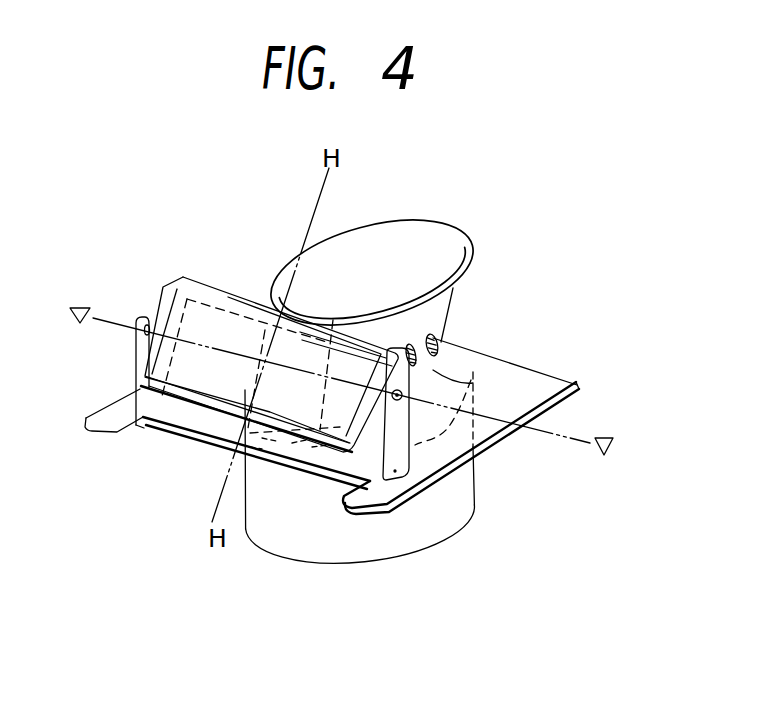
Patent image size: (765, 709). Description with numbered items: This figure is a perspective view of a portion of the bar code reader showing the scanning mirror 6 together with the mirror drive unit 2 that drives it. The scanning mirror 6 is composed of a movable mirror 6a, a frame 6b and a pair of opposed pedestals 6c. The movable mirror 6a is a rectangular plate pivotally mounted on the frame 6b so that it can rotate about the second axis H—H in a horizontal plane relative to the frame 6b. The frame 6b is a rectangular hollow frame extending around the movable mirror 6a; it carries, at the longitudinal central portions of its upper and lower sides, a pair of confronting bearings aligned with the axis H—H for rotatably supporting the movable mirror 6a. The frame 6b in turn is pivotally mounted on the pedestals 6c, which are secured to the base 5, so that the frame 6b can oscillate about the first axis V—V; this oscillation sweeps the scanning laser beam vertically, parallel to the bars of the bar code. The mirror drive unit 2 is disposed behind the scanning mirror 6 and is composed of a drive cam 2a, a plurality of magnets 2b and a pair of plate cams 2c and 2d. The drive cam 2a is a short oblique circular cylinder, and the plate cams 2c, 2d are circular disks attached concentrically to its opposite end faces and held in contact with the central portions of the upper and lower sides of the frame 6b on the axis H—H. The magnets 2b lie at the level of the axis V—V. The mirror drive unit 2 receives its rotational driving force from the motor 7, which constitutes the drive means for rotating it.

The mirror drive unit 2 is at (424, 289).
The drive cam 2a is at (440, 311).
The magnets 2b is at (436, 337).
The plate cam 2c is at (452, 233).
The plate cam 2d is at (433, 362).
The base 5 is at (578, 384).
The scanning mirror 6 is at (159, 316).
The movable mirror 6a is at (200, 373).
The frame 6b is at (212, 410).
The pedestals 6c is at (132, 340).
The motor 7 is at (343, 535).